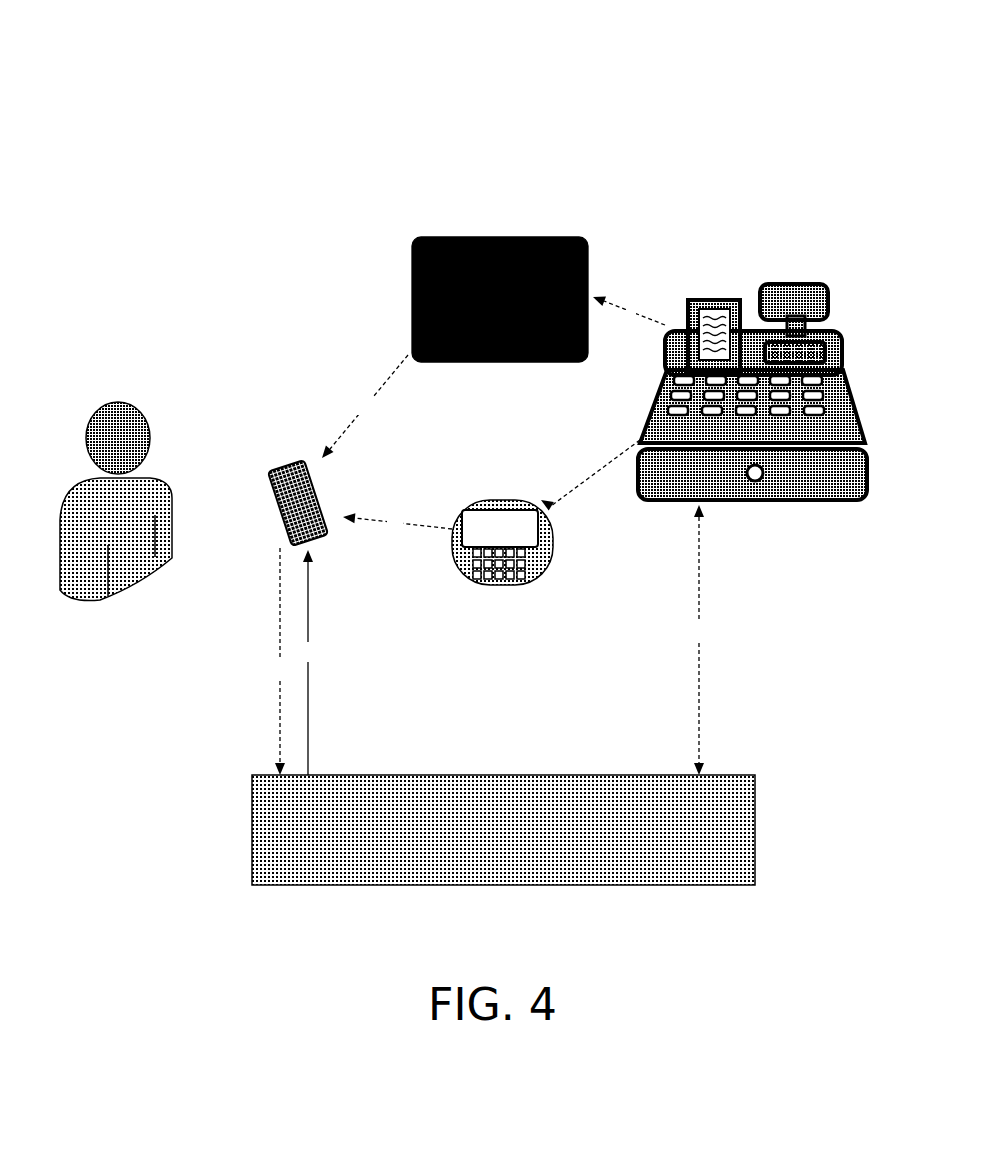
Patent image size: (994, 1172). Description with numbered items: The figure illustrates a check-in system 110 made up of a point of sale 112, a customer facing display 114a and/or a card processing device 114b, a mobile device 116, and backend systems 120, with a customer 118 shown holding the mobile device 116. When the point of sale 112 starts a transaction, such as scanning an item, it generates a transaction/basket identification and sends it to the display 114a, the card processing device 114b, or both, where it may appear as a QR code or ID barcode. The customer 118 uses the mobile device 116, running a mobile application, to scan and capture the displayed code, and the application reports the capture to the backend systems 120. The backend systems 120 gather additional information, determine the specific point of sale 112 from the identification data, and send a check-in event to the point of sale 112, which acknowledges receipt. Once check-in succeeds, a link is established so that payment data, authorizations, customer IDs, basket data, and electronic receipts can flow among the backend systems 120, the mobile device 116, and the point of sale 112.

The check-in system 110 is at (469, 115).
The point of sale 112 is at (826, 283).
The customer facing display 114a is at (578, 238).
The card processing device 114b is at (527, 582).
The mobile device 116 is at (290, 466).
The user 118 is at (118, 425).
The backend system 120 is at (287, 873).